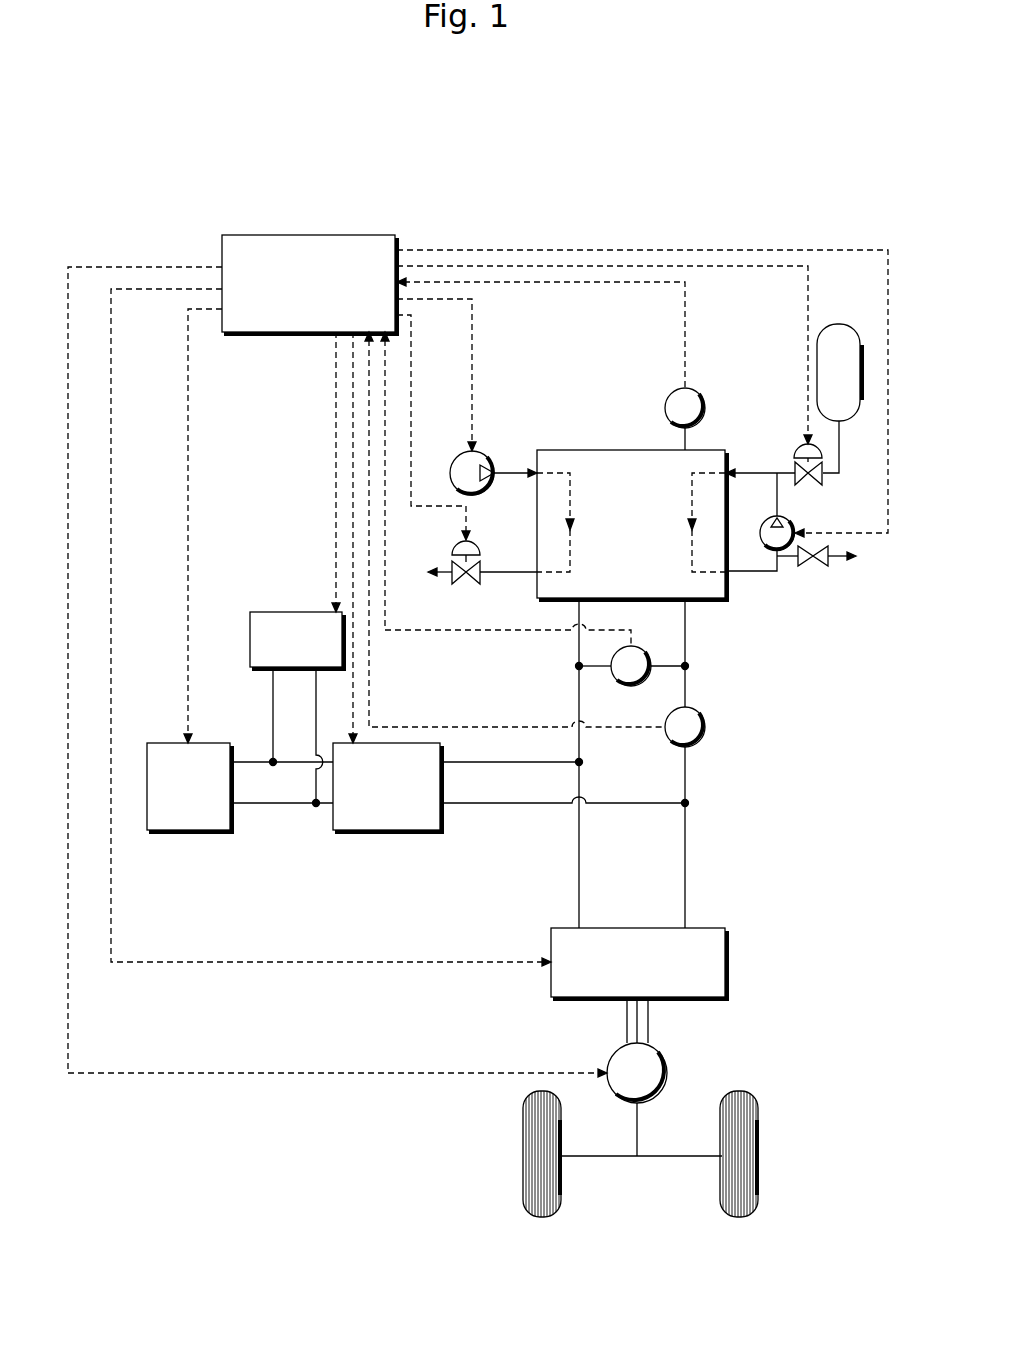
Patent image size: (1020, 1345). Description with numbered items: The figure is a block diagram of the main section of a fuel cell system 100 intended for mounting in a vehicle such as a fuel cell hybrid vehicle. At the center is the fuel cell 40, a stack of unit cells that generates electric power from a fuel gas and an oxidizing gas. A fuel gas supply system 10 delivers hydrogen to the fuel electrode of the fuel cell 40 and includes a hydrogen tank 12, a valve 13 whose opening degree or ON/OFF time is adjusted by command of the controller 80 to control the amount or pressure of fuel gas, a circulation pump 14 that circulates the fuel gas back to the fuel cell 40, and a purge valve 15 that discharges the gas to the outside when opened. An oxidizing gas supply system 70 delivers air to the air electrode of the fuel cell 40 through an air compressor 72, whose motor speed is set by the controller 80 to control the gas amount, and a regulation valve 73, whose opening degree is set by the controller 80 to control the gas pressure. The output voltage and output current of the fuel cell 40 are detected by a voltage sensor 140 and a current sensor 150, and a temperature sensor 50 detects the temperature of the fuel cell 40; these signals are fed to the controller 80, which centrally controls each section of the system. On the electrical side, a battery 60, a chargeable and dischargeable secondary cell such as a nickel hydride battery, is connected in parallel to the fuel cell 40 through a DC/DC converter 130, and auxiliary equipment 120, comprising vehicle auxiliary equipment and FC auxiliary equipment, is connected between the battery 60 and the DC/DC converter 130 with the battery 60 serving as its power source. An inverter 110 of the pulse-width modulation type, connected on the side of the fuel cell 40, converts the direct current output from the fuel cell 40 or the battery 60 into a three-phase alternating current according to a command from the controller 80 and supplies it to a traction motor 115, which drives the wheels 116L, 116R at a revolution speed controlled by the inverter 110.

The fuel cell system 100 is at (607, 176).
The controller 80 is at (326, 235).
The fuel cell 40 is at (563, 450).
The temperature sensor 50 is at (666, 418).
The oxidizing gas supply system 70 is at (521, 440).
The air compressor 72 is at (478, 451).
The regulation valve 73 is at (470, 541).
The hydrogen tank 12 is at (845, 326).
The fuel gas supply system 10 is at (761, 440).
The valve 13 is at (803, 483).
The circulation pump 14 is at (765, 523).
The purge valve 15 is at (806, 567).
The voltage sensor 140 is at (637, 646).
The current sensor 150 is at (701, 740).
The auxiliary equipment 120 is at (293, 612).
The battery 60 is at (200, 833).
The DC/DC converter 130 is at (420, 833).
The inverter 110 is at (698, 928).
The traction motor 115 is at (663, 1093).
The wheel 116L is at (540, 1219).
The wheel 116R is at (740, 1219).